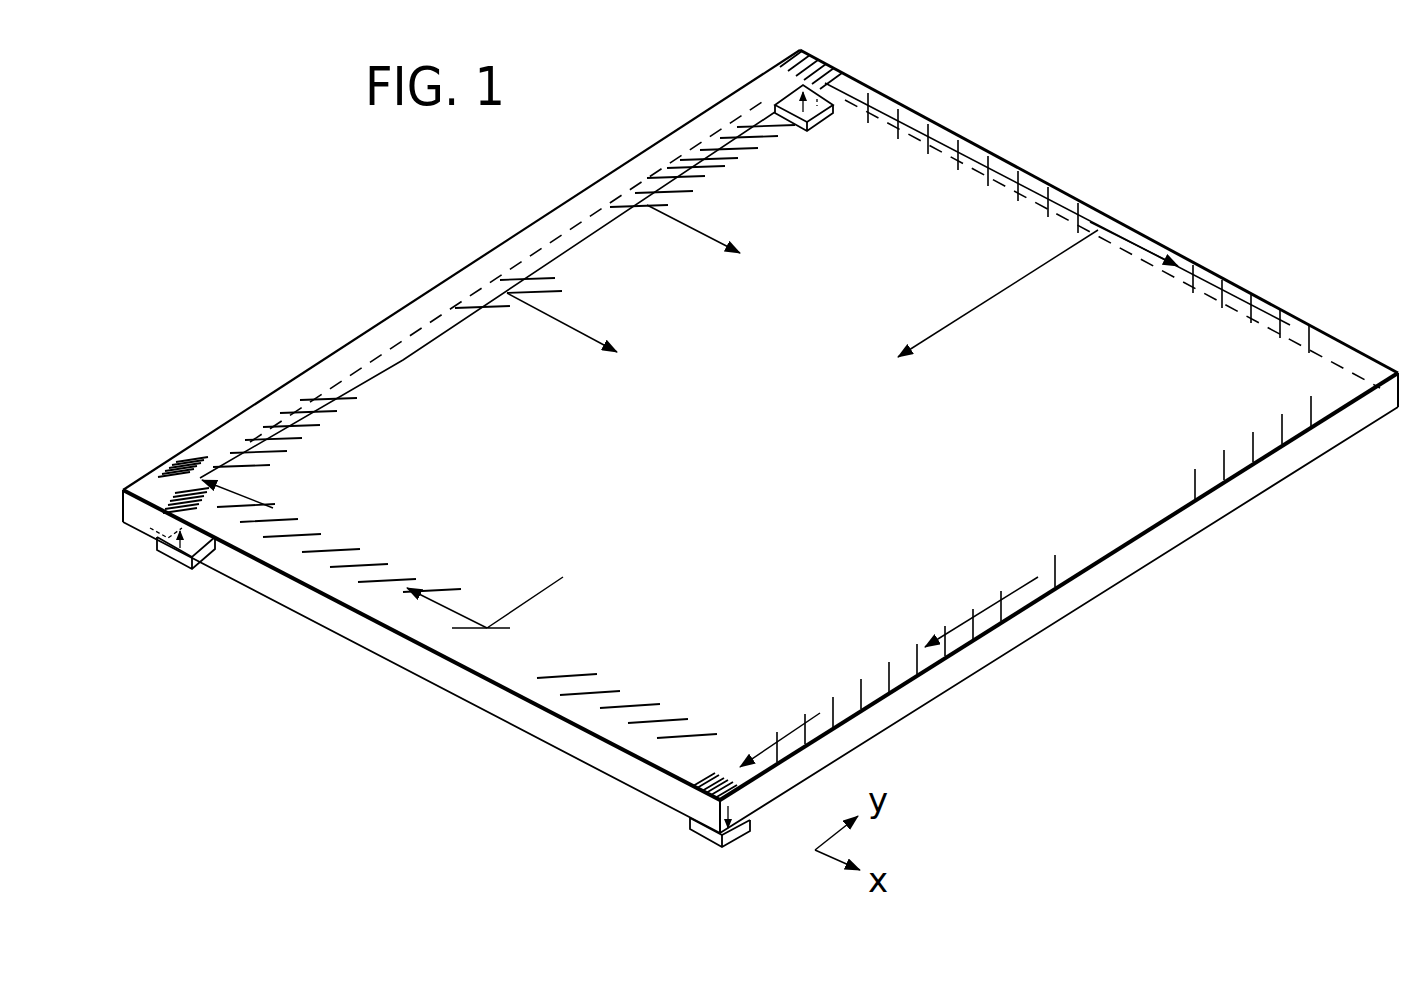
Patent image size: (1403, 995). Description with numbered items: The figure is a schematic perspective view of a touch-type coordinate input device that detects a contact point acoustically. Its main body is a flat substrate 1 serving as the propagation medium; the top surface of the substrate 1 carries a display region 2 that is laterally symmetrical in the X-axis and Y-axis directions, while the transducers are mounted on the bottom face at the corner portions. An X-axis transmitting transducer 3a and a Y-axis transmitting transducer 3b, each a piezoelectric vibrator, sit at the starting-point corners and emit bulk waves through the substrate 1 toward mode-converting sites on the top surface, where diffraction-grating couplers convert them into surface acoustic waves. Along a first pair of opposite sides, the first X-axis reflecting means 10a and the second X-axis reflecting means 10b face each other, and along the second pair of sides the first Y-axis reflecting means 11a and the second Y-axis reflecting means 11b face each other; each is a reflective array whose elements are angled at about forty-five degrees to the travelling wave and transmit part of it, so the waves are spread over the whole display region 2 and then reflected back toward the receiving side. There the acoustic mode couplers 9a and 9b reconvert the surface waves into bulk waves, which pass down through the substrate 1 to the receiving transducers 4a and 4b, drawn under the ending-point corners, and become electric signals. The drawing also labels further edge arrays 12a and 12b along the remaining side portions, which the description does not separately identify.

The substrate 1 is at (1028, 630).
The display region 2 is at (790, 280).
The transmitting transducer 3a is at (850, 88).
The transmitting transducer 3b is at (180, 570).
The receiving transducer 4a is at (152, 545).
The receiving transducer 4b is at (702, 843).
The acoustic mode coupler 9a is at (790, 58).
The acoustic mode coupler 9b is at (150, 524).
The first X-axis reflecting means 10a is at (172, 462).
The second X-axis reflecting means 10b is at (690, 792).
The first Y-axis reflecting means 11a is at (1025, 178).
The second Y-axis reflecting means 11b is at (552, 678).
The reflective array 12a is at (472, 298).
The reflective array 12b is at (1058, 568).